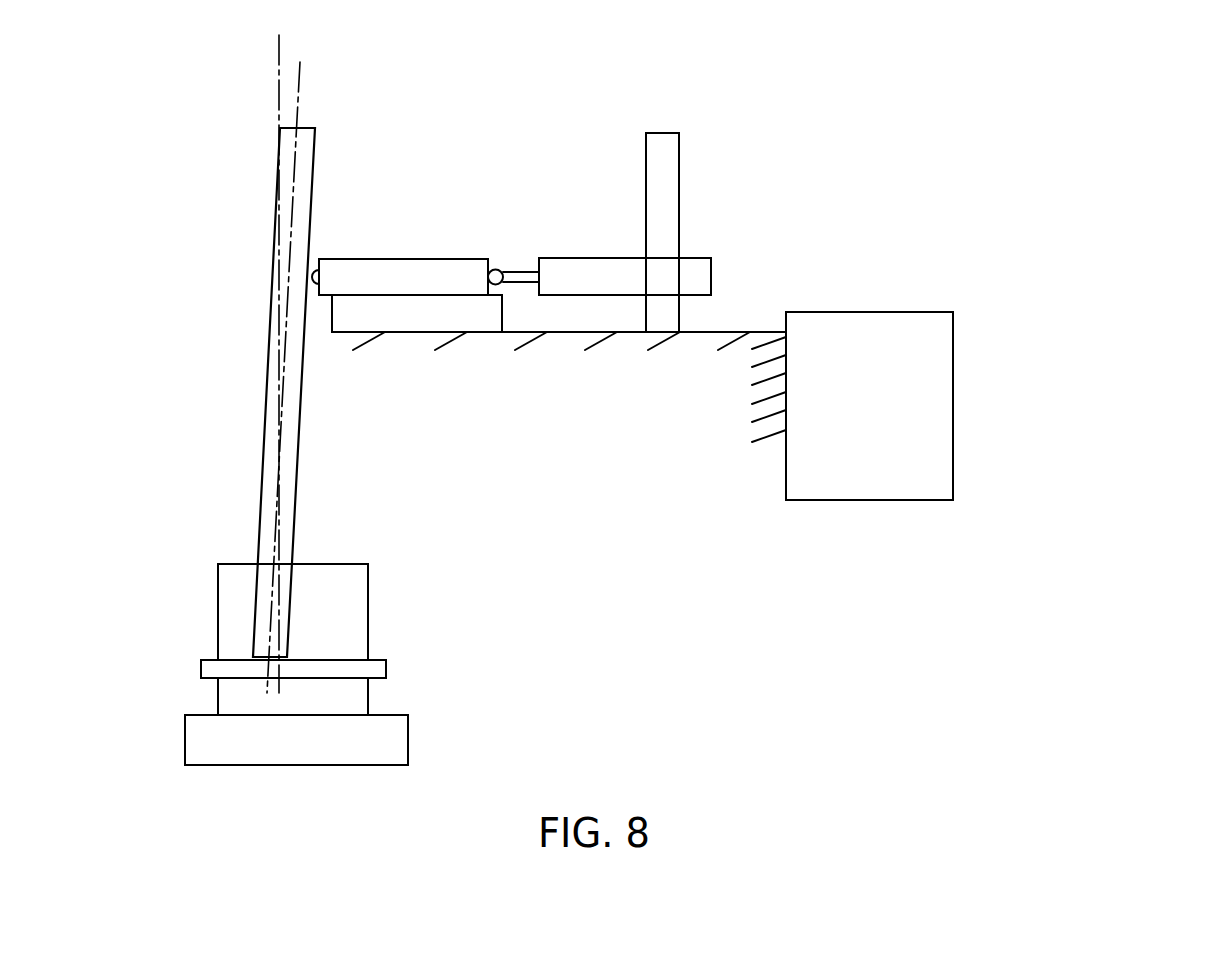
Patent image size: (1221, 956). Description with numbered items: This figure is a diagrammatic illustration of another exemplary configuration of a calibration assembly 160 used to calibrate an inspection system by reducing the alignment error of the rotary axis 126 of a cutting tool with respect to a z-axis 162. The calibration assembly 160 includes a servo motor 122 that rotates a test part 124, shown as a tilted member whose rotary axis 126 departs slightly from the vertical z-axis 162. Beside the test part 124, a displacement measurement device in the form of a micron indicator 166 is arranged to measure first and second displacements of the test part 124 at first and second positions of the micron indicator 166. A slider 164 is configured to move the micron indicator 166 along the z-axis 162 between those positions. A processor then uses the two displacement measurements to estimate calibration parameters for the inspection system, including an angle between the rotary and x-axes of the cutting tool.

The calibration assembly 160 is at (1075, 93).
The z-axis 162 is at (278, 70).
The rotary axis 126 is at (300, 83).
The test part 124 is at (296, 495).
The servo motor 122 is at (408, 735).
The slider 164 is at (977, 334).
The micron indicator 166 is at (702, 275).